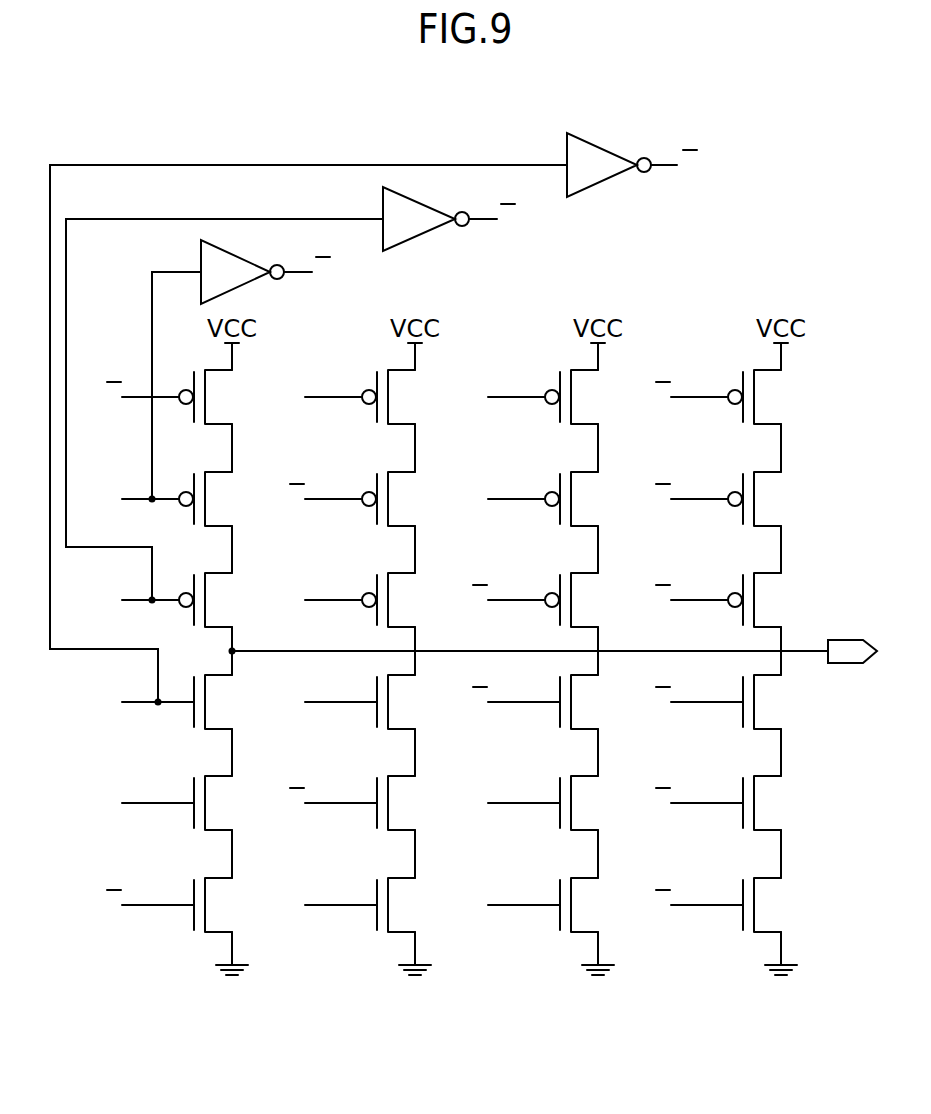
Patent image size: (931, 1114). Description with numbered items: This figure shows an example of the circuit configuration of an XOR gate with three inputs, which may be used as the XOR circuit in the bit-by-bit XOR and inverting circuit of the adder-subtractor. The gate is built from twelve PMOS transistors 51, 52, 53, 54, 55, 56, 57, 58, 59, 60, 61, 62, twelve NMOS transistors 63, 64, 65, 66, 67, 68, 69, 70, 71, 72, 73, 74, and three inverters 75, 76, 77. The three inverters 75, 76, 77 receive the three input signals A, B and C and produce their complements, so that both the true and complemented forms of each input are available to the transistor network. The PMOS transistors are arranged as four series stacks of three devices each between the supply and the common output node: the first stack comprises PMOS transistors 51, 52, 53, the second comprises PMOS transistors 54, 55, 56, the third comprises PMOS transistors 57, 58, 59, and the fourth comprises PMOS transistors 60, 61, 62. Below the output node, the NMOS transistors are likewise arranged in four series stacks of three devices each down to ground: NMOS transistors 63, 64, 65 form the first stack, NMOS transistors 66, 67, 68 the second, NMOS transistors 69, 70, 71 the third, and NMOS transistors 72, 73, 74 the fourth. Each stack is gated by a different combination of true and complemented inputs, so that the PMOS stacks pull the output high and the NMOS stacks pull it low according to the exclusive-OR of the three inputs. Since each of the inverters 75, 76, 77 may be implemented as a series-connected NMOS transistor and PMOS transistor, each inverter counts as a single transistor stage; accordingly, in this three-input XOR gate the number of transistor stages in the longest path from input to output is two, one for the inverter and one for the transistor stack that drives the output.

The PMOS transistor 51 is at (205, 425).
The PMOS transistor 52 is at (205, 527).
The PMOS transistor 53 is at (205, 628).
The PMOS transistor 54 is at (388, 425).
The PMOS transistor 55 is at (388, 527).
The PMOS transistor 56 is at (388, 630).
The PMOS transistor 57 is at (571, 425).
The PMOS transistor 58 is at (571, 527).
The PMOS transistor 59 is at (571, 630).
The PMOS transistor 60 is at (754, 425).
The PMOS transistor 61 is at (754, 527).
The PMOS transistor 62 is at (754, 630).
The NMOS transistor 63 is at (205, 730).
The NMOS transistor 64 is at (205, 831).
The NMOS transistor 65 is at (205, 933).
The NMOS transistor 66 is at (388, 730).
The NMOS transistor 67 is at (388, 831).
The NMOS transistor 68 is at (388, 933).
The NMOS transistor 69 is at (571, 730).
The NMOS transistor 70 is at (571, 831).
The NMOS transistor 71 is at (571, 933).
The NMOS transistor 72 is at (754, 730).
The NMOS transistor 73 is at (754, 831).
The NMOS transistor 74 is at (754, 933).
The inverter 75 is at (602, 145).
The inverter 76 is at (418, 200).
The inverter 77 is at (237, 253).